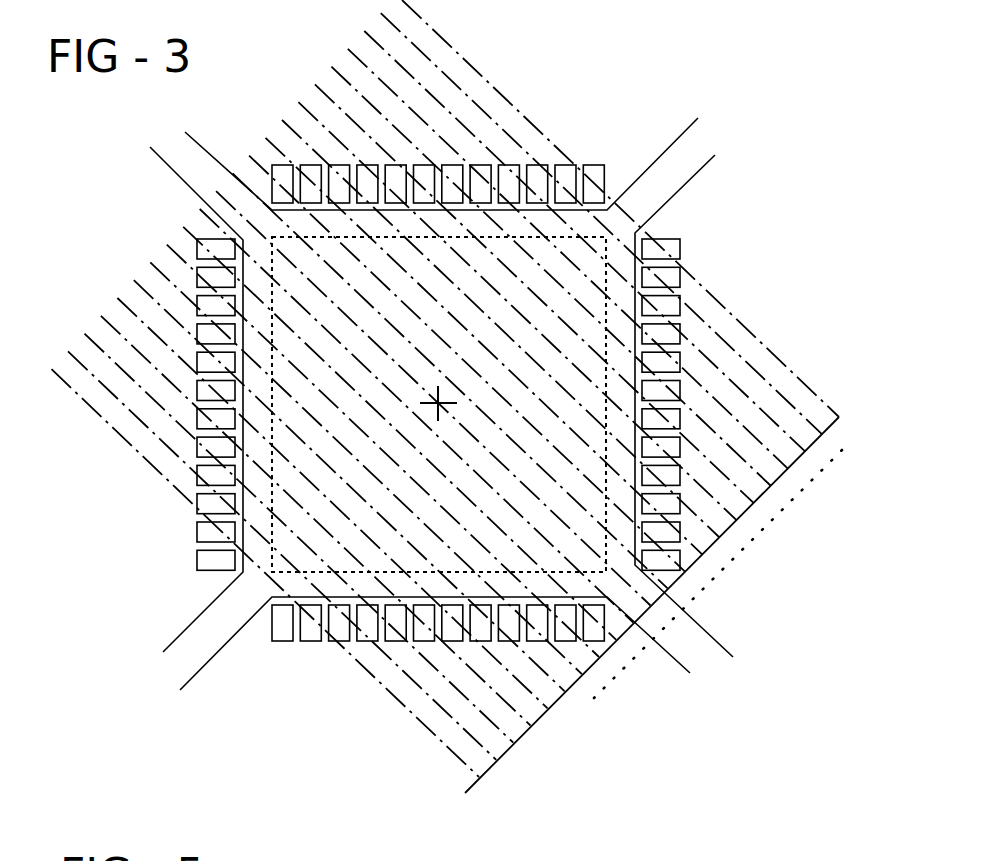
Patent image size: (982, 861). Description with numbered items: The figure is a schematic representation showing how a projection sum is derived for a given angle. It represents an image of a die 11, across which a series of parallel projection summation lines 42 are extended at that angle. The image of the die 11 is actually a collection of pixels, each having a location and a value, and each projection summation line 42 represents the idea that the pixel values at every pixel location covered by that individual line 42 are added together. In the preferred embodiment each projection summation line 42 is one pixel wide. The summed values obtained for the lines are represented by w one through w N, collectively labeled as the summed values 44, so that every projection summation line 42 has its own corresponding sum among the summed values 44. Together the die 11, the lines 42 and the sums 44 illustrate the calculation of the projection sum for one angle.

The die 11 is at (576, 263).
The projection summation lines 42 is at (717, 330).
The summed values w1 through wN 44 is at (534, 795).